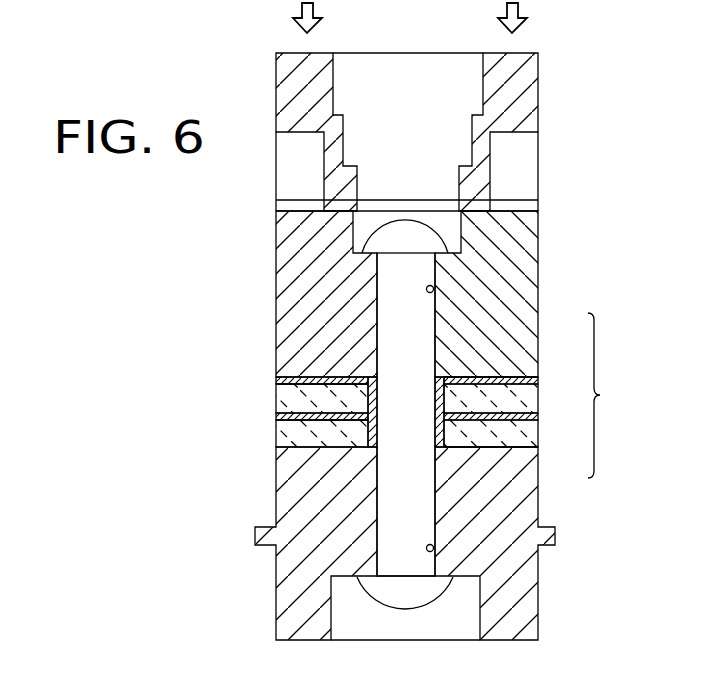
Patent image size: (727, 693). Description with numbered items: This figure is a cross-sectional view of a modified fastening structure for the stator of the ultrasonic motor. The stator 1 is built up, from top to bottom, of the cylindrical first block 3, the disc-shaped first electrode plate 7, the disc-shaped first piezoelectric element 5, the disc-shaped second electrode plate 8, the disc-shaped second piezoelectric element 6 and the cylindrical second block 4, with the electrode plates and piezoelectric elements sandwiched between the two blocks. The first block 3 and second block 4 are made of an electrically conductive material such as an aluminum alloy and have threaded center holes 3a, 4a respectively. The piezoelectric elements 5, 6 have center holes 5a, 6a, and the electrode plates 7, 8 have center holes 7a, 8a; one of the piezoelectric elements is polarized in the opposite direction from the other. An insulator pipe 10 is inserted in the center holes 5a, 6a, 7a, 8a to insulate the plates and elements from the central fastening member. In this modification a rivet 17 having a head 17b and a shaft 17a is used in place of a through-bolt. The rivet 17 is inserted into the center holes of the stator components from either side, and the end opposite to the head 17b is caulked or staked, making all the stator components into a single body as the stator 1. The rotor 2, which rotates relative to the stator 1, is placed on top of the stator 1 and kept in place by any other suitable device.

The stator 1 is at (602, 395).
The rotor 2 is at (527, 98).
The first block 3 is at (527, 328).
The threaded center hole 3a is at (433, 289).
The second block 4 is at (540, 470).
The threaded center hole 4a is at (433, 548).
The first piezoelectric element 5 is at (543, 398).
The center hole 5a is at (285, 394).
The second piezoelectric element 6 is at (540, 443).
The center hole 6a is at (444, 447).
The first electrode plate 7 is at (538, 372).
The center hole 7a is at (444, 375).
The second electrode plate 8 is at (540, 417).
The center hole 8a is at (292, 428).
The insulator pipe 10 is at (374, 376).
The rivet 17 is at (375, 505).
The shaft 17a is at (386, 306).
The head 17b is at (405, 605).